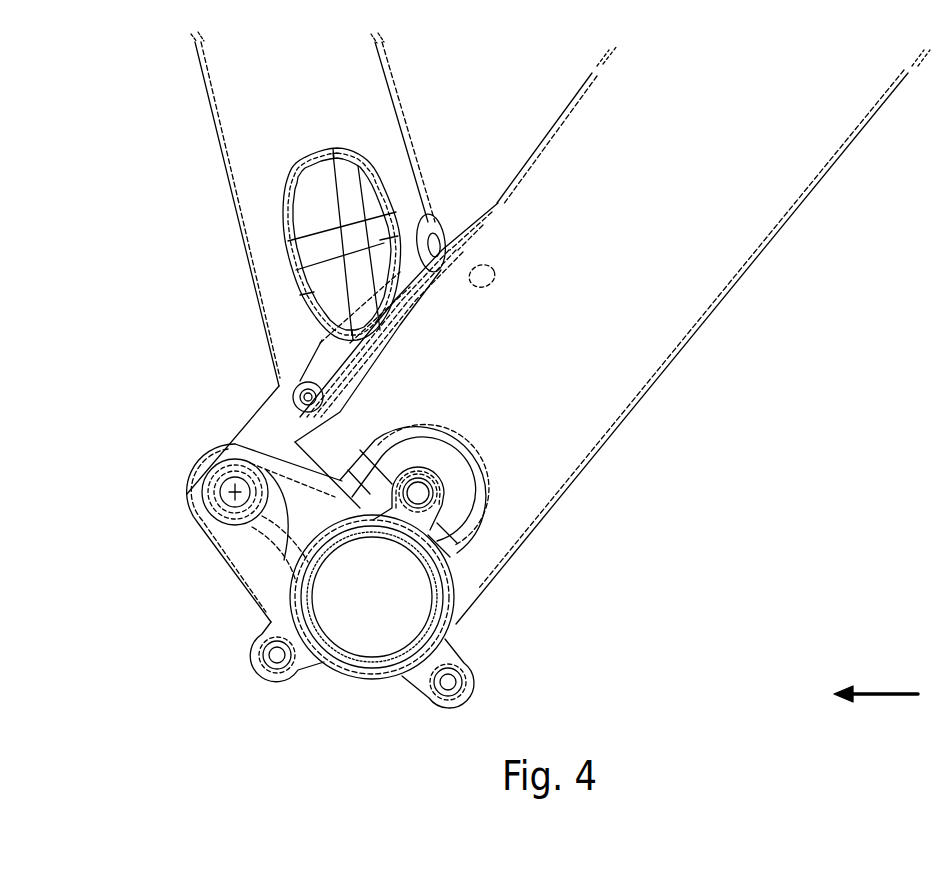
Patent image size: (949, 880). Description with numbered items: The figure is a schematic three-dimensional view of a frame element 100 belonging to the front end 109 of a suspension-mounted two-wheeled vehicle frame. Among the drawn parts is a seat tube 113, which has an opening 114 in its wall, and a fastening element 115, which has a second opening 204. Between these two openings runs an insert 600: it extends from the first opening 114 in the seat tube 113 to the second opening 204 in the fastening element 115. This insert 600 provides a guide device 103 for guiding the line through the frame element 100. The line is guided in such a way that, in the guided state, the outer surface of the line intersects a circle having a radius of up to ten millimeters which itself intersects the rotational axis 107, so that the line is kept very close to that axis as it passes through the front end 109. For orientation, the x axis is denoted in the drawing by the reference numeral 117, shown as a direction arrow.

The frame element 100 is at (506, 141).
The guide device 103 is at (443, 215).
The rotational axis 107 is at (236, 490).
The front end 109 is at (596, 578).
The seat tube 113 is at (213, 122).
The opening 114 is at (433, 214).
The fastening element 115 is at (237, 583).
The x axis 117 is at (862, 693).
The second opening 204 is at (203, 541).
The insert 600 is at (313, 348).